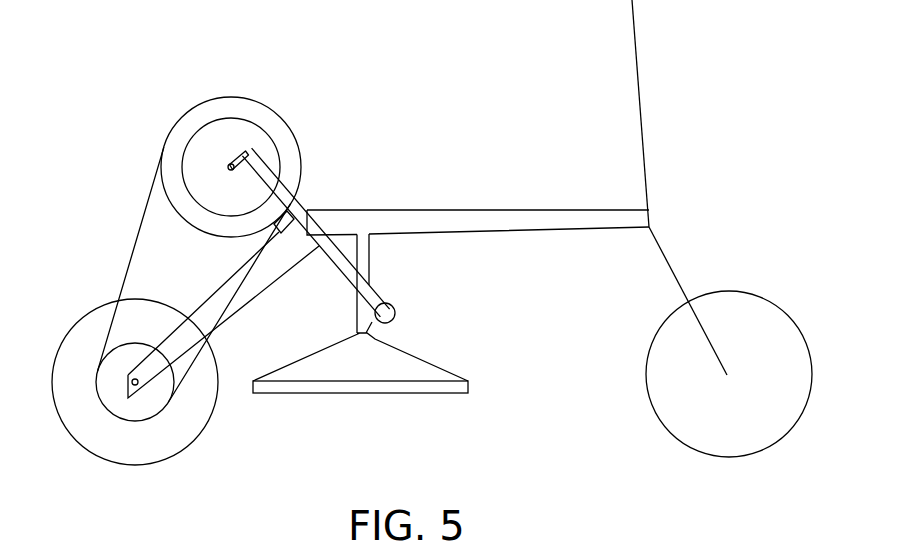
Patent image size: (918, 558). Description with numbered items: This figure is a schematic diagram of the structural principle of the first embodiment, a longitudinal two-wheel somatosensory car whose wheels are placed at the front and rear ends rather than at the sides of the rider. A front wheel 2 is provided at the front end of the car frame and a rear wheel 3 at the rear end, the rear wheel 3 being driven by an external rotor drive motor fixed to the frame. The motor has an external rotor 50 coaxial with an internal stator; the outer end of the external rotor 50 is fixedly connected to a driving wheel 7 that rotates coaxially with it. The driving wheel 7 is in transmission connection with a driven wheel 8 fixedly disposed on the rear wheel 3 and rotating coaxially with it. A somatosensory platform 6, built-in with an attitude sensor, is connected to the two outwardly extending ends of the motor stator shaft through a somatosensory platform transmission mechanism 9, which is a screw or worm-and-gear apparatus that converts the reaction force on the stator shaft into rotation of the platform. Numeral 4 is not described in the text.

The front wheel 2 is at (782, 335).
The rear wheel 3 is at (53, 360).
The steering column 4 is at (700, 0).
The somatosensory platform 6 is at (418, 387).
The driving wheel 7 is at (245, 98).
The driven wheel 8 is at (97, 367).
The somatosensory platform transmission mechanism 9 is at (321, 227).
The external rotor 50 is at (257, 123).